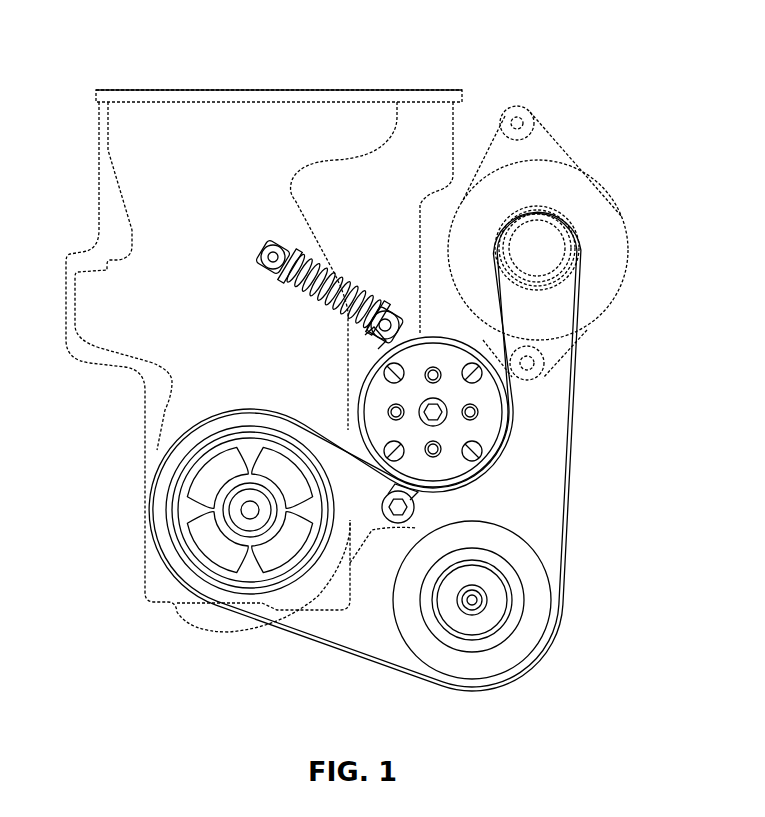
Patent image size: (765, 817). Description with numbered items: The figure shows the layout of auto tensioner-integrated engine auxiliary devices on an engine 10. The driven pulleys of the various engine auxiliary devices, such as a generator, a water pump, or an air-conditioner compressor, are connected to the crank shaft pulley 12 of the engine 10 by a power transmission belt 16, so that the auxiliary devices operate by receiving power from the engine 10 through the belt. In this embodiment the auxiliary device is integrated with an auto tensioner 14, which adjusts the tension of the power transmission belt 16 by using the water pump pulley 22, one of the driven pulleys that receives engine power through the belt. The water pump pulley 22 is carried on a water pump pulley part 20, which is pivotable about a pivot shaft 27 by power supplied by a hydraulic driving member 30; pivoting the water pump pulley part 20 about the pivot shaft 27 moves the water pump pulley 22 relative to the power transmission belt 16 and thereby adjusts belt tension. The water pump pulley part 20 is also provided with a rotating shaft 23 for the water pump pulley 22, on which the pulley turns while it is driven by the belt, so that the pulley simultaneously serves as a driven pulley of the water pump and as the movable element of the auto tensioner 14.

The engine 10 is at (167, 90).
The crank shaft pulley 12 is at (197, 582).
The auto tensioner 14 is at (378, 265).
The power transmission belt 16 is at (310, 635).
The water pump pulley part 20 is at (348, 386).
The water pump pulley 22 is at (493, 412).
The rotating shaft 23 is at (447, 417).
The pivot shaft 27 is at (402, 507).
The hydraulic driving member 30 is at (265, 245).